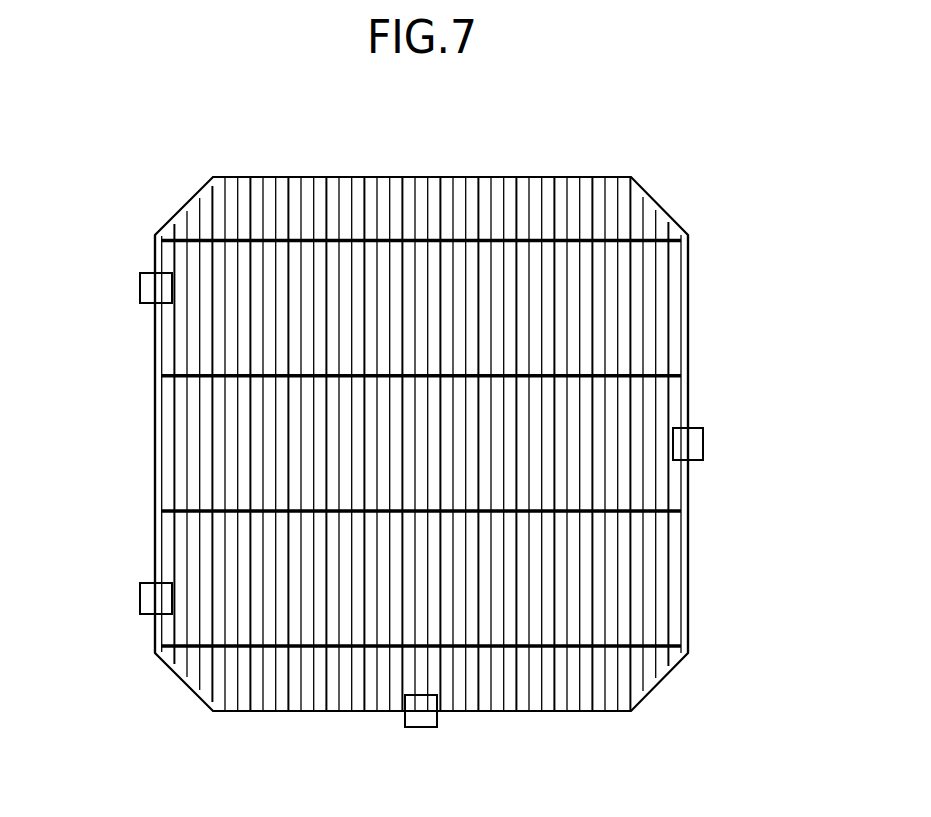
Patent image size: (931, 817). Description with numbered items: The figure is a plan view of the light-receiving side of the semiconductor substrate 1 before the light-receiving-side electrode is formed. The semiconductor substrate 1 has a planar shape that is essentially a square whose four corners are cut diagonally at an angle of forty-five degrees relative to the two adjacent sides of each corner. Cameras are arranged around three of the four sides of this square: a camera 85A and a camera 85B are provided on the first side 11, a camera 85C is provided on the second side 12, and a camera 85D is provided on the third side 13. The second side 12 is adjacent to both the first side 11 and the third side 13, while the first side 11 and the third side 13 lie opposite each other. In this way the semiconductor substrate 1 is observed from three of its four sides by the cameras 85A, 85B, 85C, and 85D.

The semiconductor substrate 1 is at (522, 176).
The first side 11 is at (155, 421).
The second side 12 is at (560, 711).
The third side 13 is at (688, 309).
The camera 85A is at (140, 287).
The camera 85B is at (140, 600).
The camera 85C is at (430, 727).
The camera 85D is at (703, 438).